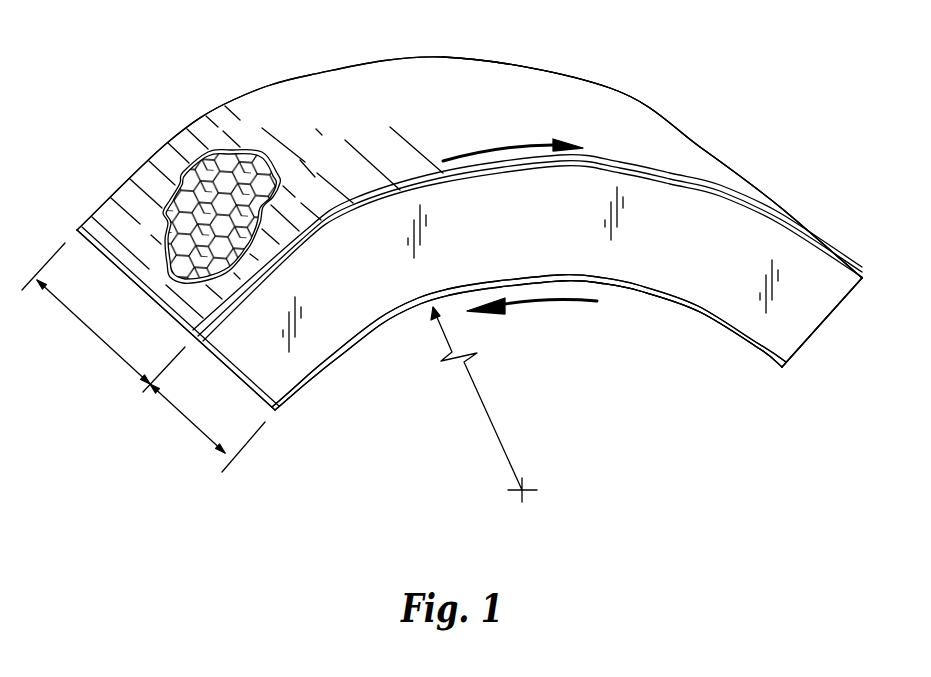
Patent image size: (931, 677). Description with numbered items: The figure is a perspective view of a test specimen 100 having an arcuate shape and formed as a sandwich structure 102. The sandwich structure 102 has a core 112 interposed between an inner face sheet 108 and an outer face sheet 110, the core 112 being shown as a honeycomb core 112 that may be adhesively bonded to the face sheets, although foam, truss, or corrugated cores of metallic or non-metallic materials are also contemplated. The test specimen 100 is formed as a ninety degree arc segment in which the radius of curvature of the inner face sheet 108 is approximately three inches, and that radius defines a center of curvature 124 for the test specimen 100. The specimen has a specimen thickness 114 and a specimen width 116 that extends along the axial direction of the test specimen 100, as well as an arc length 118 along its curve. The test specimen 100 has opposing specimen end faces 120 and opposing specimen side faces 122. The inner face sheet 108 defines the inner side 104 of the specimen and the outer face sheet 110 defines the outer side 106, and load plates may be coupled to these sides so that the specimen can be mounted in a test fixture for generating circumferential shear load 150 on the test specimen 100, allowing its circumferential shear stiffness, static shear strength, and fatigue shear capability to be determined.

The test specimen 100 is at (436, 56).
The sandwich structure 102 is at (338, 68).
The inner side 104 is at (360, 340).
The outer side 106 is at (577, 83).
The inner face sheet 108 is at (715, 325).
The outer face sheet 110 is at (808, 320).
The core 112 is at (176, 198).
The specimen thickness 114 is at (188, 418).
The specimen width 116 is at (83, 323).
The arc length 118 is at (680, 182).
The specimen end faces 120 is at (645, 273).
The specimen side faces 122 is at (172, 318).
The center of curvature 124 is at (488, 413).
The circumferential shear load 150 is at (500, 303).